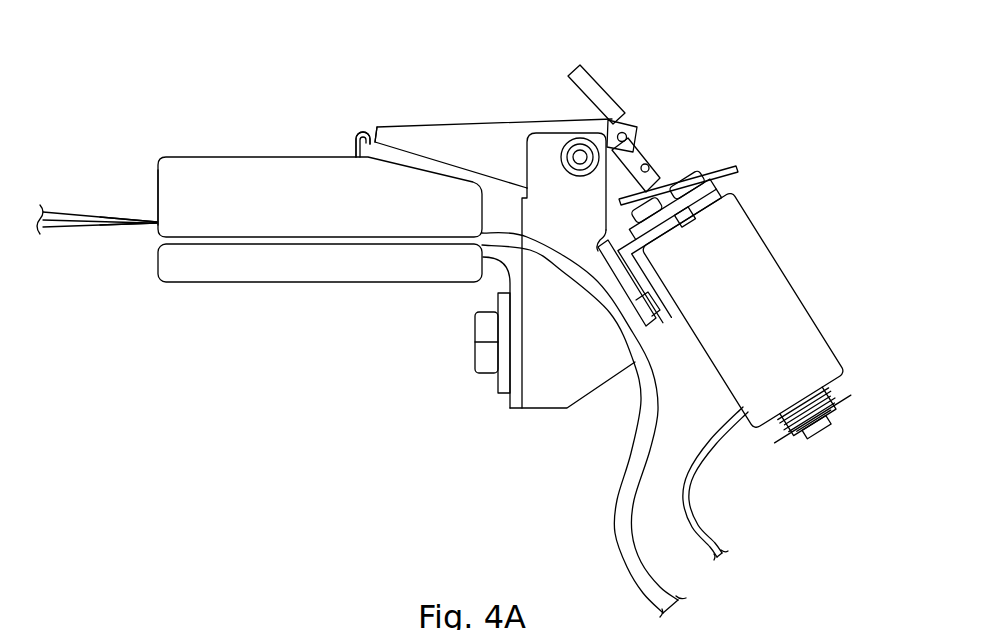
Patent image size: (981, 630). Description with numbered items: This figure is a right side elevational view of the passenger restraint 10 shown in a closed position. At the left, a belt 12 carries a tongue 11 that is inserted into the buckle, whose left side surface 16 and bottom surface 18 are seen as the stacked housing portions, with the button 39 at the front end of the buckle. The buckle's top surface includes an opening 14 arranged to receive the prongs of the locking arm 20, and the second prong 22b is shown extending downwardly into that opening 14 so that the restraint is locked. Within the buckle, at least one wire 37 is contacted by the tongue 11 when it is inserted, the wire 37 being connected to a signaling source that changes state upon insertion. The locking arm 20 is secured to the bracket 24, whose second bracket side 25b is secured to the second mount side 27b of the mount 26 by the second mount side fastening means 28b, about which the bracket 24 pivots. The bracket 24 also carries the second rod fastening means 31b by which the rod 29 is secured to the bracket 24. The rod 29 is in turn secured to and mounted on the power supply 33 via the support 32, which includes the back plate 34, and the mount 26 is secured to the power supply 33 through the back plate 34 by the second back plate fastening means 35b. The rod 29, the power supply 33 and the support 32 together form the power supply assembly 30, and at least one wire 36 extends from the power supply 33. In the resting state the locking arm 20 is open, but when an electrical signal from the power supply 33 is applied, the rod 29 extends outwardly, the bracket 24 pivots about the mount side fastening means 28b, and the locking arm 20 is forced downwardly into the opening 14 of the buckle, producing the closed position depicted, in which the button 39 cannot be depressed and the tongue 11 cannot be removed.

The passenger restraint 10 is at (829, 111).
The tongue 11 is at (147, 227).
The belt 12 is at (77, 227).
The opening 14 is at (357, 153).
The left side surface 16 is at (320, 197).
The bottom surface 18 is at (287, 282).
The locking arm 20 is at (382, 122).
The second prong 22b is at (372, 130).
The bracket 24 is at (513, 105).
The second bracket side 25b is at (493, 153).
The mount 26 is at (603, 343).
The second mount side 27b is at (528, 332).
The second mount side fastening means 28b is at (622, 118).
The rod 29 is at (580, 157).
The power supply assembly 30 is at (819, 237).
The second rod fastening means 31b is at (636, 128).
The support 32 is at (735, 167).
The power supply 33 is at (800, 297).
The back plate 34 is at (648, 325).
The second back plate fastening means 35b is at (642, 322).
The wire 36 is at (707, 543).
The wire 37 is at (617, 523).
The button 39 is at (158, 183).